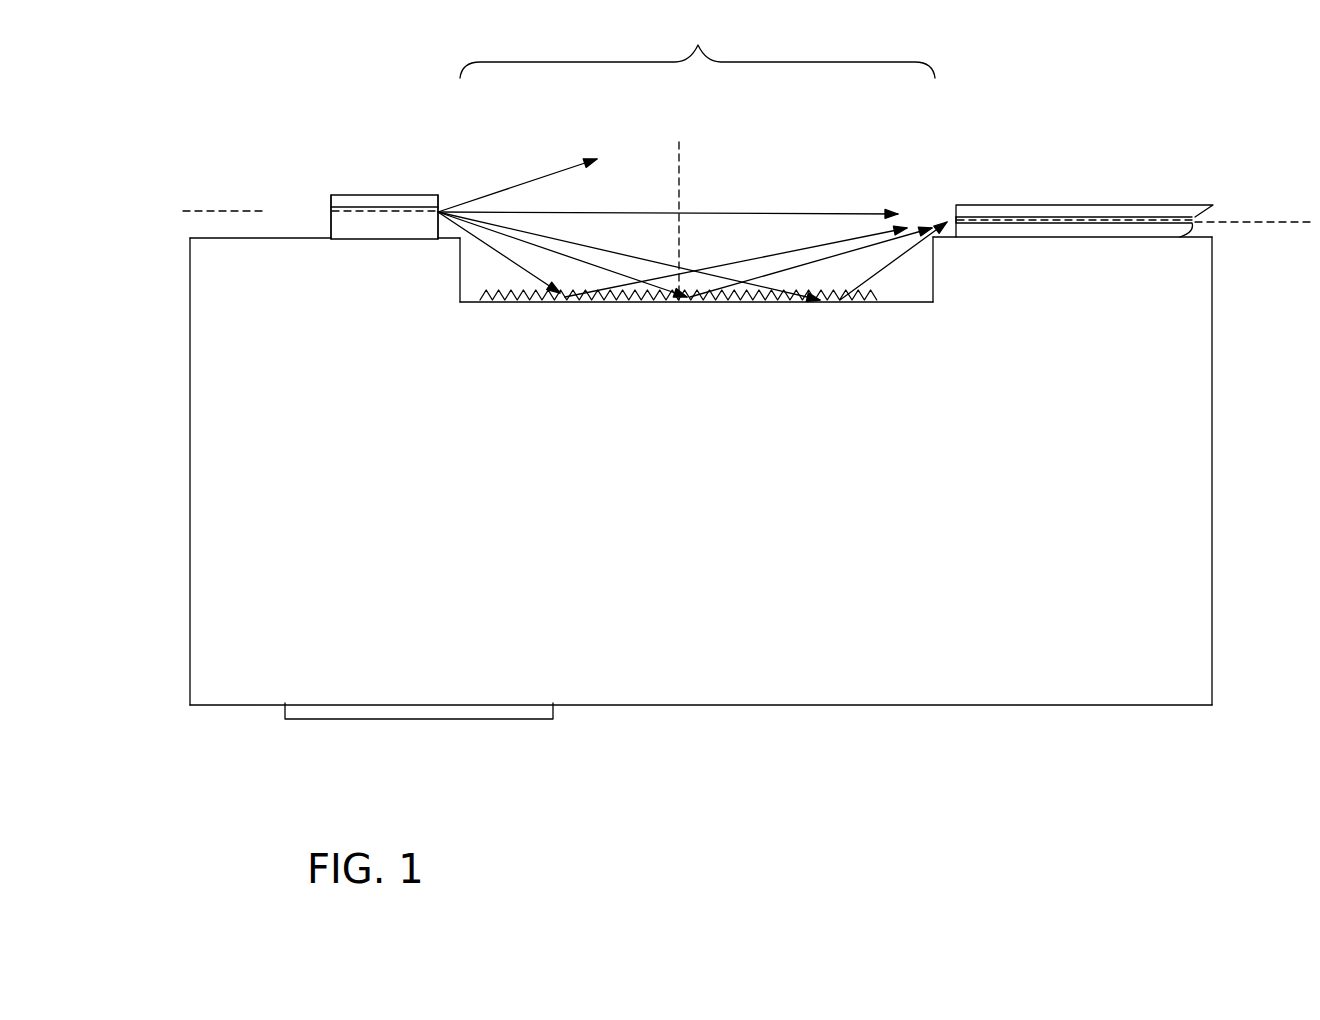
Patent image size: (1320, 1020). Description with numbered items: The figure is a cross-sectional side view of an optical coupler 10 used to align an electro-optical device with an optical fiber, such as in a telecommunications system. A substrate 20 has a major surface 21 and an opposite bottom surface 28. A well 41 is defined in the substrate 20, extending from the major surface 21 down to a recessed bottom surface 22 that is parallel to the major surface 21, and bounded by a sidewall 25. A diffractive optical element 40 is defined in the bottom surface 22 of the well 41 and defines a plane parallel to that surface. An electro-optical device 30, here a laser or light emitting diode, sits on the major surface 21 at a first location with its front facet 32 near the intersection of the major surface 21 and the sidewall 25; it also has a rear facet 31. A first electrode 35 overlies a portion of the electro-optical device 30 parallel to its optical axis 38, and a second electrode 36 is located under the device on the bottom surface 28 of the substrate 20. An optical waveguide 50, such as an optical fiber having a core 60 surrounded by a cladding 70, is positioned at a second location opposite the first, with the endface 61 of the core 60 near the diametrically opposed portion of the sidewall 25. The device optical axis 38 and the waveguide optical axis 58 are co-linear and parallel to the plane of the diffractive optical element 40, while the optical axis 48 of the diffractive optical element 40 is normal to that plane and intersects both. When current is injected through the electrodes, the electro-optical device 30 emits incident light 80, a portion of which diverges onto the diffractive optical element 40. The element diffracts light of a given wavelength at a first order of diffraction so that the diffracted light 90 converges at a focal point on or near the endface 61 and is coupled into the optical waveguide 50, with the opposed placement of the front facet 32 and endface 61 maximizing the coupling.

The optical coupler 10 is at (693, 815).
The substrate 20 is at (1007, 673).
The major surface 21 is at (213, 240).
The bottom surface 22 is at (900, 302).
The sidewall 25 is at (457, 267).
The bottom surface of substrate 28 is at (793, 708).
The electro-optical device 30 is at (375, 225).
The rear facet 31 is at (332, 223).
The front facet 32 is at (425, 220).
The first electrode 35 is at (418, 202).
The second electrode 36 is at (492, 710).
The optical axis 38 is at (267, 211).
The diffractive optical element 40 is at (643, 303).
The well 41 is at (697, 42).
The optical axis of the diffractive optical element 48 is at (680, 180).
The optical waveguide 50 is at (1073, 170).
The waveguide optical axis 58 is at (1242, 222).
The core 60 is at (1122, 222).
The endface 61 is at (967, 223).
The cladding 70 is at (982, 210).
The incident light 80 is at (514, 167).
The diffracted light 90 is at (837, 235).